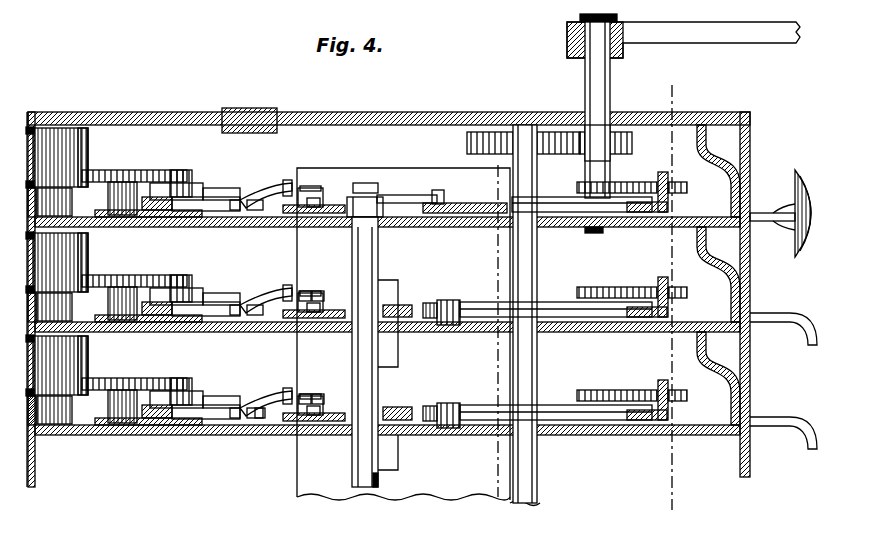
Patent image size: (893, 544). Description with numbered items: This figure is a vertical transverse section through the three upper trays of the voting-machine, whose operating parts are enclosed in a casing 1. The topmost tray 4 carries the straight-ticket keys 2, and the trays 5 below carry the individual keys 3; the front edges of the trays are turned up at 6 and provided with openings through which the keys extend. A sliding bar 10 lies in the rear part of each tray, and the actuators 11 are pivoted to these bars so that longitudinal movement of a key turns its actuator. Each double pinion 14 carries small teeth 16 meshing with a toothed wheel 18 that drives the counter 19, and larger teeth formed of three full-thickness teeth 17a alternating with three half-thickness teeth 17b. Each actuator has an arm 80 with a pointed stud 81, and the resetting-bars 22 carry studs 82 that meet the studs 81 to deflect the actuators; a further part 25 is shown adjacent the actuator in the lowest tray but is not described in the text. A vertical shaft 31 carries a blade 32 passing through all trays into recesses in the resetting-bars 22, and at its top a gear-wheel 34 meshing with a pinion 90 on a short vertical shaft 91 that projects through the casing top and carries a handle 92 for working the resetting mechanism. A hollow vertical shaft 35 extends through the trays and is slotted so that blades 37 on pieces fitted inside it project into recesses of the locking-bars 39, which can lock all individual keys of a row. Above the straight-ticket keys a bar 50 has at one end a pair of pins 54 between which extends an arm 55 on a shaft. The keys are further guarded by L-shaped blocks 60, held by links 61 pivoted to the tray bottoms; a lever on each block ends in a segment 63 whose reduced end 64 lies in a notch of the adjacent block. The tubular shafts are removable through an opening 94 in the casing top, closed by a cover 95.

The casing 1 is at (148, 112).
The straight-ticket key 2 is at (768, 213).
The individual key 3 is at (770, 314).
The tray 4 is at (471, 227).
The tray 5 is at (600, 449).
The turned-up front edge 6 is at (714, 168).
The sliding bar 10 is at (160, 227).
The actuator 11 is at (212, 211).
The double pinion 14 is at (190, 188).
The small teeth 16 is at (183, 170).
The thick tooth 17a is at (214, 190).
The thin tooth 17b is at (198, 292).
The toothed wheel 18 is at (125, 170).
The counter 19 is at (88, 137).
The resetting-bar 22 is at (312, 214).
The pin 25 is at (257, 418).
The shaft 31 is at (538, 175).
The blade 32 is at (418, 336).
The gear-wheel 34 is at (467, 140).
The hollow vertical shaft 35 is at (380, 482).
The blade 37 is at (398, 347).
The locking-bar 39 is at (400, 303).
The bar 50 is at (478, 203).
The pins 54 is at (445, 190).
The arm 55 is at (405, 195).
The locking block 60 is at (645, 213).
The link 61 is at (575, 213).
The segment 63 is at (622, 183).
The reduced end 64 is at (687, 186).
The arm 80 is at (271, 185).
The pointed stud 81 is at (303, 293).
The stud 82 is at (320, 305).
The pinion 90 is at (620, 138).
The short vertical shaft 91 is at (585, 80).
The handle 92 is at (718, 44).
The opening 94 is at (248, 109).
The cover 95 is at (407, 112).